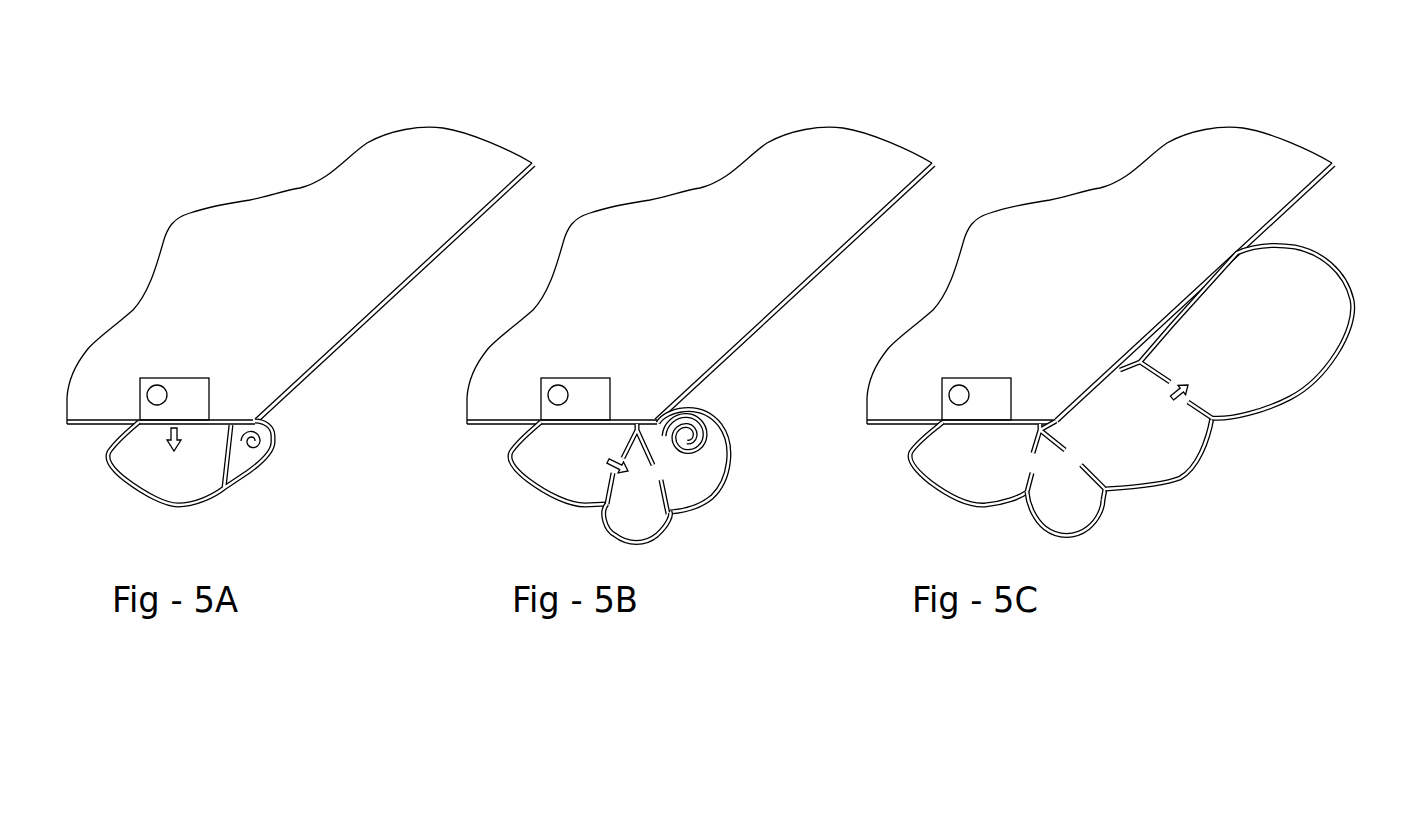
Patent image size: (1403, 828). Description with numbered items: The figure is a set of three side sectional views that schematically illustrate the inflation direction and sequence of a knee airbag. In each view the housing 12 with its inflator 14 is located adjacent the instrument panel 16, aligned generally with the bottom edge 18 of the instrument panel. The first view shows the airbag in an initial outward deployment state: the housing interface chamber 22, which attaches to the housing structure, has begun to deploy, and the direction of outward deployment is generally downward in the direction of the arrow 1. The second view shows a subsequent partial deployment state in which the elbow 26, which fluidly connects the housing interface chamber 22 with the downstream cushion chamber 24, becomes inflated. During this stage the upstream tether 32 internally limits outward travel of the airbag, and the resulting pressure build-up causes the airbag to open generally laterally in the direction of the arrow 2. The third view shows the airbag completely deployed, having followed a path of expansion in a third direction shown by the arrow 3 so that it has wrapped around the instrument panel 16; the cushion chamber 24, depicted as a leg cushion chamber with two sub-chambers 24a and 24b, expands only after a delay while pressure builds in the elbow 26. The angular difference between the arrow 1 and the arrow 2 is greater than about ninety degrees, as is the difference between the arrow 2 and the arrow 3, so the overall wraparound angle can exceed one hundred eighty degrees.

In FIG. 5A, the arrow 1 is at (181, 443).
In FIG. 5B, the arrow 2 is at (620, 479).
In FIG. 5C, the arrow 3 is at (1178, 407).
In FIG. 5A, the housing 12 is at (199, 378).
In FIG. 5B, the housing 12 is at (599, 378).
In FIG. 5C, the housing 12 is at (999, 378).
In FIG. 5A, the inflator 14 is at (147, 396).
In FIG. 5B, the inflator 14 is at (548, 396).
In FIG. 5C, the inflator 14 is at (949, 396).
In FIG. 5C, the instrument panel 16 is at (1256, 240).
In FIG. 5C, the bottom edge 18 is at (1050, 420).
In FIG. 5A, the housing interface chamber 22 is at (123, 485).
In FIG. 5C, the cushion chamber 24 is at (1245, 373).
In FIG. 5C, the sub-chamber 24a is at (1180, 463).
In FIG. 5C, the sub-chamber 24b is at (1288, 375).
In FIG. 5B, the elbow 26 is at (670, 529).
In FIG. 5C, the elbow 26 is at (1105, 524).
In FIG. 5B, the upstream tether 32 is at (610, 477).